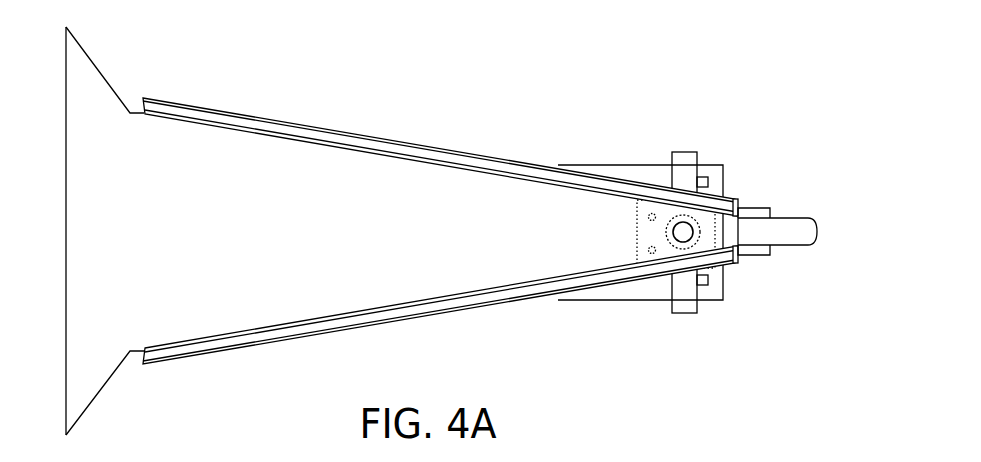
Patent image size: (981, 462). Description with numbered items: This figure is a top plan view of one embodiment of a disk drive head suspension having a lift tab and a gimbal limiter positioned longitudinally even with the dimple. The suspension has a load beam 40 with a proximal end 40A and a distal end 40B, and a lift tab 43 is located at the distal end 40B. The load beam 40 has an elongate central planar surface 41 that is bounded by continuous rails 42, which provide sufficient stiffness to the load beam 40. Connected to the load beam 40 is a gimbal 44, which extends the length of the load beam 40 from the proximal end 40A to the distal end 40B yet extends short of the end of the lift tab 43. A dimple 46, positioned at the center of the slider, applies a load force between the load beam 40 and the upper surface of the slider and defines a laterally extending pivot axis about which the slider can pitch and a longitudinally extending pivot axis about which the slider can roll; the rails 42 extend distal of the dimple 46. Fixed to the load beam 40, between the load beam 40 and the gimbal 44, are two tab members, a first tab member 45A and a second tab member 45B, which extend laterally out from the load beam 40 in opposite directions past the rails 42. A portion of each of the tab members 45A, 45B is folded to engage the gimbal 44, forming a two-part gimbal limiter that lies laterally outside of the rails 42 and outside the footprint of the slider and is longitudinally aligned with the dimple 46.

The load beam 40 is at (421, 231).
The proximal end 40A is at (62, 222).
The distal end 40B is at (743, 268).
The elongate central planar surface 41 is at (203, 224).
The continuous rails 42 is at (302, 126).
The lift tab 43 is at (802, 218).
The gimbal 44 is at (640, 232).
The first tab member 45A is at (684, 152).
The second tab member 45B is at (683, 313).
The dimple 46 is at (666, 238).